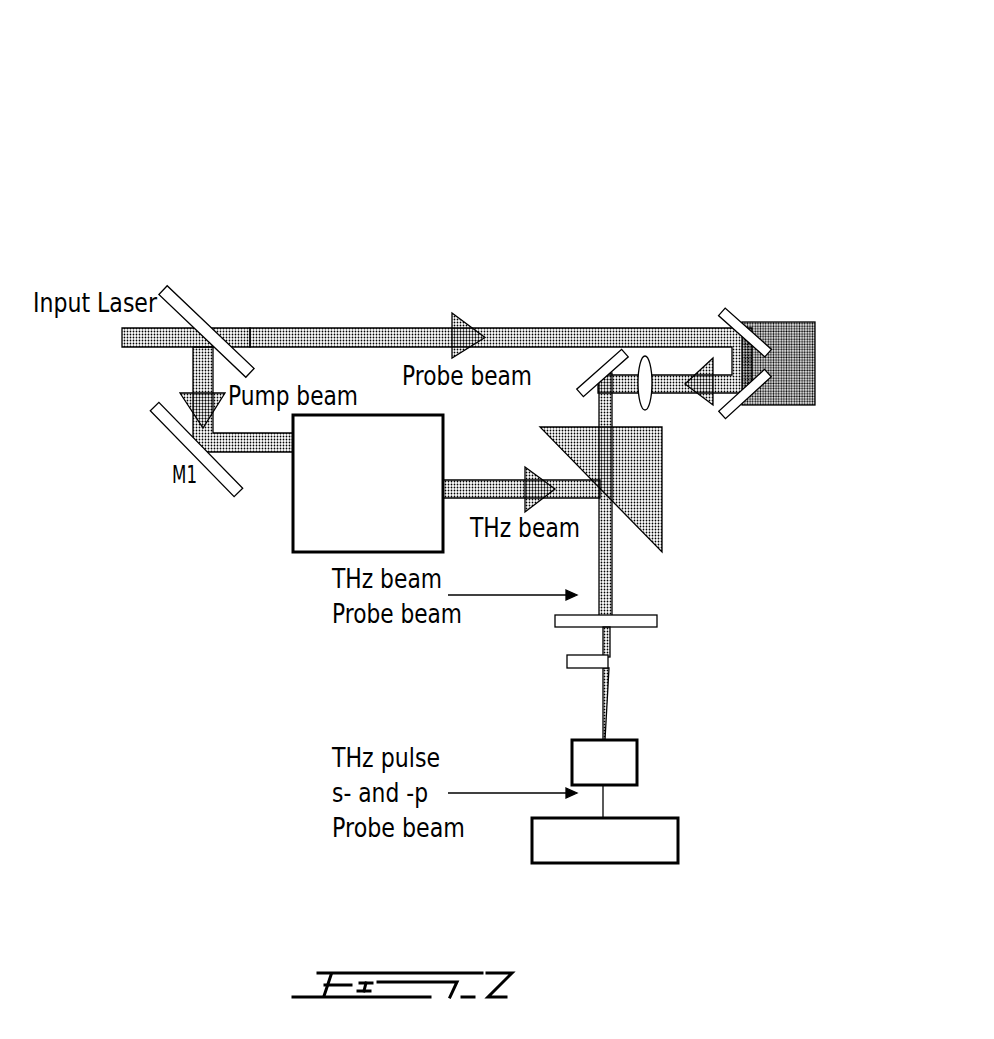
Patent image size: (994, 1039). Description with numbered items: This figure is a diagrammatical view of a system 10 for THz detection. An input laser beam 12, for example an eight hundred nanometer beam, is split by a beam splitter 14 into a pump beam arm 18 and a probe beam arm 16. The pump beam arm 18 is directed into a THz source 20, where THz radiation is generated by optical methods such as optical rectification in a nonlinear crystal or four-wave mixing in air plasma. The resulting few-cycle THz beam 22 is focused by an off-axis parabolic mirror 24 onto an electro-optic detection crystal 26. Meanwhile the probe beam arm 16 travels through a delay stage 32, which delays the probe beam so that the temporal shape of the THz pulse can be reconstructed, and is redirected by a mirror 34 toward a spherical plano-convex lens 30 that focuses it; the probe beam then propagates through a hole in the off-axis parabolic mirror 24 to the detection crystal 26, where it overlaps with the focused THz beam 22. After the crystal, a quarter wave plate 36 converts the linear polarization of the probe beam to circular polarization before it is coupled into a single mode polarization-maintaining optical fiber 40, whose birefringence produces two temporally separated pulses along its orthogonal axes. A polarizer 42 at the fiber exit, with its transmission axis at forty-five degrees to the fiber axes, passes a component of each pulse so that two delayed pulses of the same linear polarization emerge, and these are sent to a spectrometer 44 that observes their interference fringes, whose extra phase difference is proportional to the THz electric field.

The system 10 is at (117, 72).
The laser beam 12 is at (171, 374).
The beam splitter 14 is at (206, 304).
The probe beam arm 16 is at (501, 327).
The pump beam arm 18 is at (220, 399).
The THz source 20 is at (333, 484).
The THz beam 22 is at (521, 518).
The off-axis parabolic mirror 24 is at (636, 489).
The electro-optic detection crystal 26 is at (649, 619).
The spherical plano-convex lens 30 is at (657, 330).
The delay stage 32 is at (778, 394).
The mirror 34 is at (603, 323).
The quarter wave plate 36 is at (630, 666).
The polarization-maintaining optical fiber 40 is at (565, 683).
The polarizer 42 is at (633, 762).
The spectrometer 44 is at (639, 840).